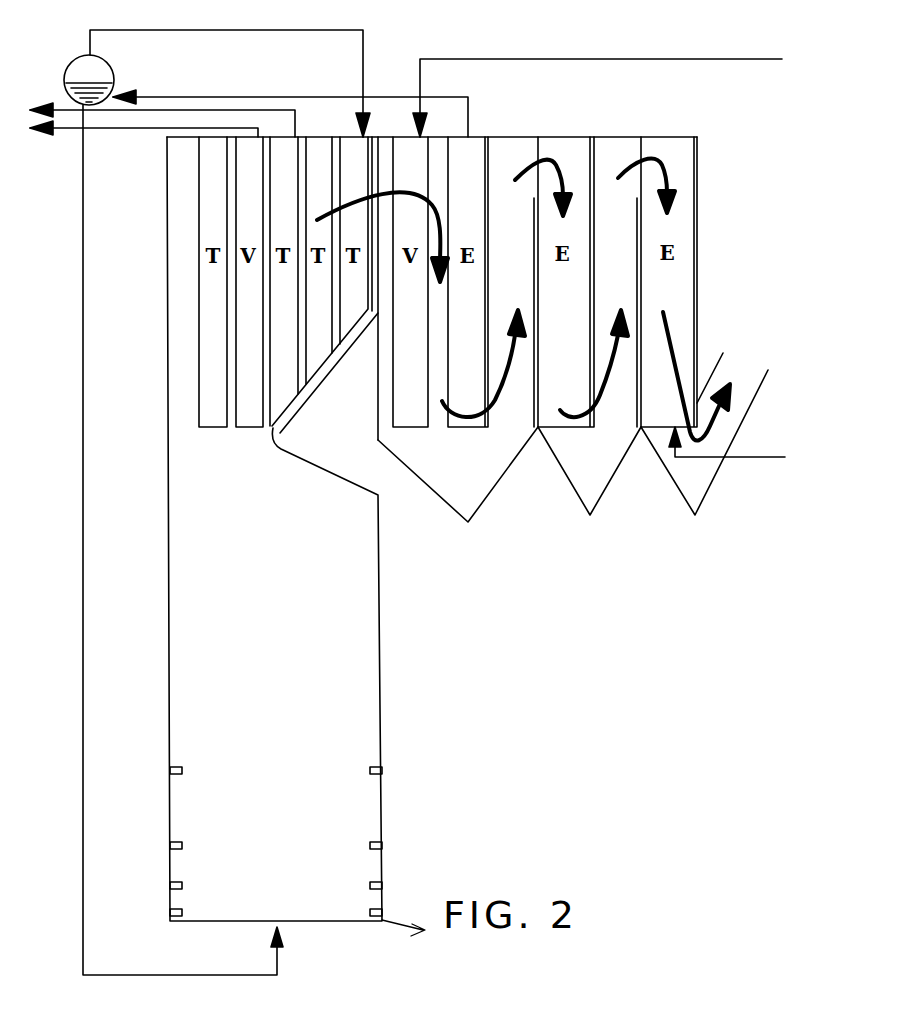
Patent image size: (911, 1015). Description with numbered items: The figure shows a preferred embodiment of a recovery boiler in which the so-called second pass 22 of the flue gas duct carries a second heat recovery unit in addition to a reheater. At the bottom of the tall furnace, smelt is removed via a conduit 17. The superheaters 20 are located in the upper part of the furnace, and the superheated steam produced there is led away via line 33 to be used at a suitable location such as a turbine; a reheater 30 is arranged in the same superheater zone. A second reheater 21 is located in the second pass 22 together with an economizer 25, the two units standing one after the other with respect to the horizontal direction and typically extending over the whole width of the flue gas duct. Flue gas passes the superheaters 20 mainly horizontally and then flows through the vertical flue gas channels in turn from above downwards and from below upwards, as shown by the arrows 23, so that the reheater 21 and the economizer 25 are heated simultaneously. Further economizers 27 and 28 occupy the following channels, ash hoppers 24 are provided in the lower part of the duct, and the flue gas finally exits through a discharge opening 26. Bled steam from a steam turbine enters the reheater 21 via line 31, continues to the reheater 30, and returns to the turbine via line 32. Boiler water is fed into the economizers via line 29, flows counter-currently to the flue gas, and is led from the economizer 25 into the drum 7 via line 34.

The drum 7 is at (108, 61).
The conduit 17 is at (393, 927).
The superheaters 20 is at (211, 418).
The second reheater 21 is at (400, 407).
The second pass 22 is at (384, 352).
The arrows 23 is at (673, 342).
The ash hoppers 24 is at (450, 497).
The economizer 25 is at (473, 285).
The discharge opening 26 is at (735, 367).
The economizer 27 is at (568, 285).
The economizer 28 is at (685, 213).
The line 29 is at (745, 462).
The reheater 30 is at (247, 418).
The line 31 is at (685, 56).
The line 32 is at (118, 130).
The line 33 is at (235, 110).
The line 34 is at (163, 95).